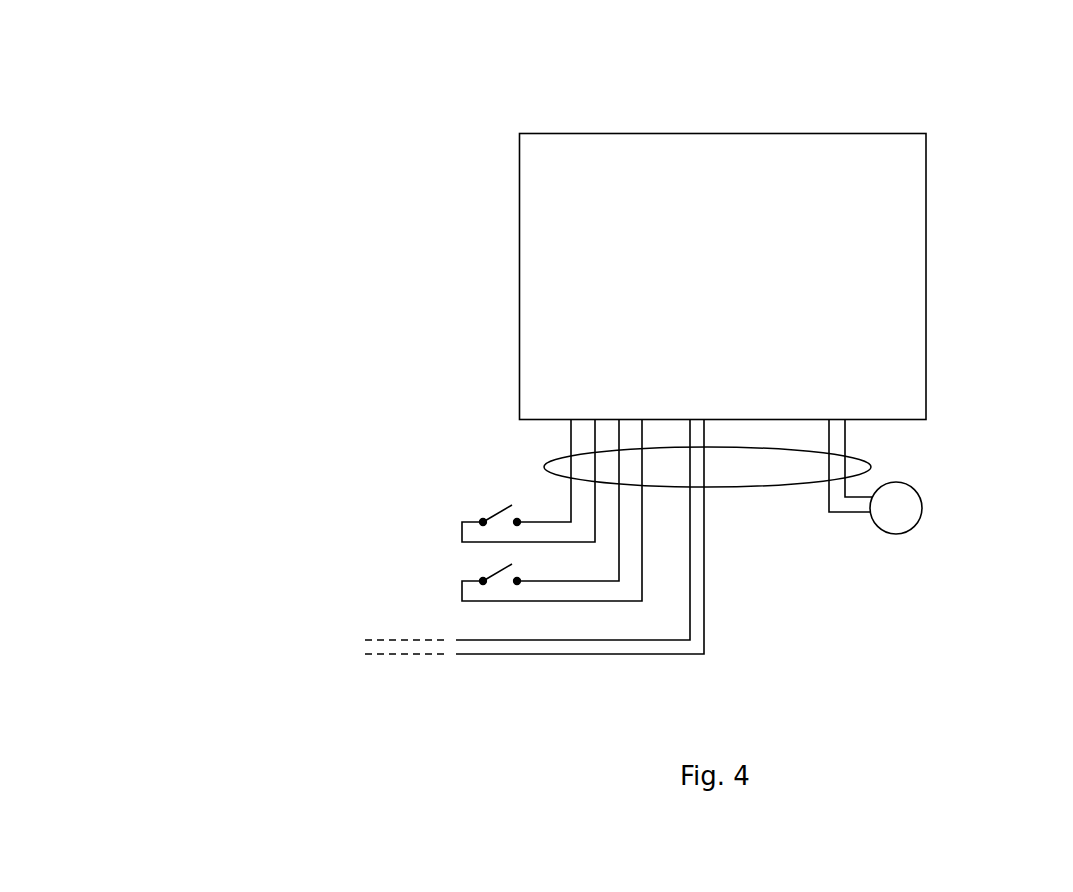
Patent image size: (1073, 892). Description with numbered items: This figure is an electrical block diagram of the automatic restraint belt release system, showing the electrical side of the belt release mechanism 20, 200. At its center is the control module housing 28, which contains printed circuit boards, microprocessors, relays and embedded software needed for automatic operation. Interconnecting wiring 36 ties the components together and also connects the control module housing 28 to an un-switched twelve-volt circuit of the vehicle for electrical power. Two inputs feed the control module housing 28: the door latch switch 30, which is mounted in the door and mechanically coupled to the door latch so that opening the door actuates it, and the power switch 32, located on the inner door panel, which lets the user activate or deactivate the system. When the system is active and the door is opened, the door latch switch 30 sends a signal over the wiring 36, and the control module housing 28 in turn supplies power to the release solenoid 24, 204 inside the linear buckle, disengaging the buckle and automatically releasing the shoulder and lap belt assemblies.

The belt release mechanism 20 is at (635, 348).
The control system 200 is at (282, 173).
The control module housing 28 is at (873, 235).
The wiring 36 is at (545, 465).
The door latch switch 30 is at (495, 507).
The power switch 32 is at (493, 573).
The release solenoid 24 is at (945, 477).
The sensor 204 is at (918, 490).